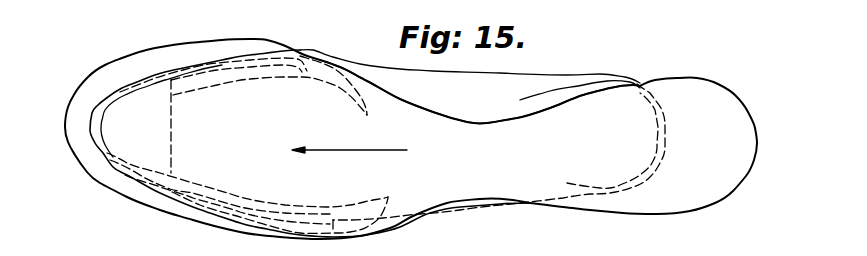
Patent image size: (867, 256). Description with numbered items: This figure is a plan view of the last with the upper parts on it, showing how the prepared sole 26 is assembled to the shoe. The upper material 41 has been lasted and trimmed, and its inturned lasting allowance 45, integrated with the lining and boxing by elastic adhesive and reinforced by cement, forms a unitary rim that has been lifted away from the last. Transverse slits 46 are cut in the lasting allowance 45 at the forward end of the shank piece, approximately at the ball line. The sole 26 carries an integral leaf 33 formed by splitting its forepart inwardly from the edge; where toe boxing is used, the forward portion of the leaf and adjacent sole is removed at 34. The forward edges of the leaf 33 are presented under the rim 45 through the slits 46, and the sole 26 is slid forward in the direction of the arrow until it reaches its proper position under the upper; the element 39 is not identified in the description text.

The sole 26 is at (411, 139).
The leaf 33 is at (337, 78).
The removed forward portion of leaf and adjacent sole 34 is at (171, 140).
The toe lining 39 is at (97, 130).
The upper material 41 is at (470, 106).
The lasting allowance 45 is at (115, 93).
The transverse slits 46 is at (332, 218).